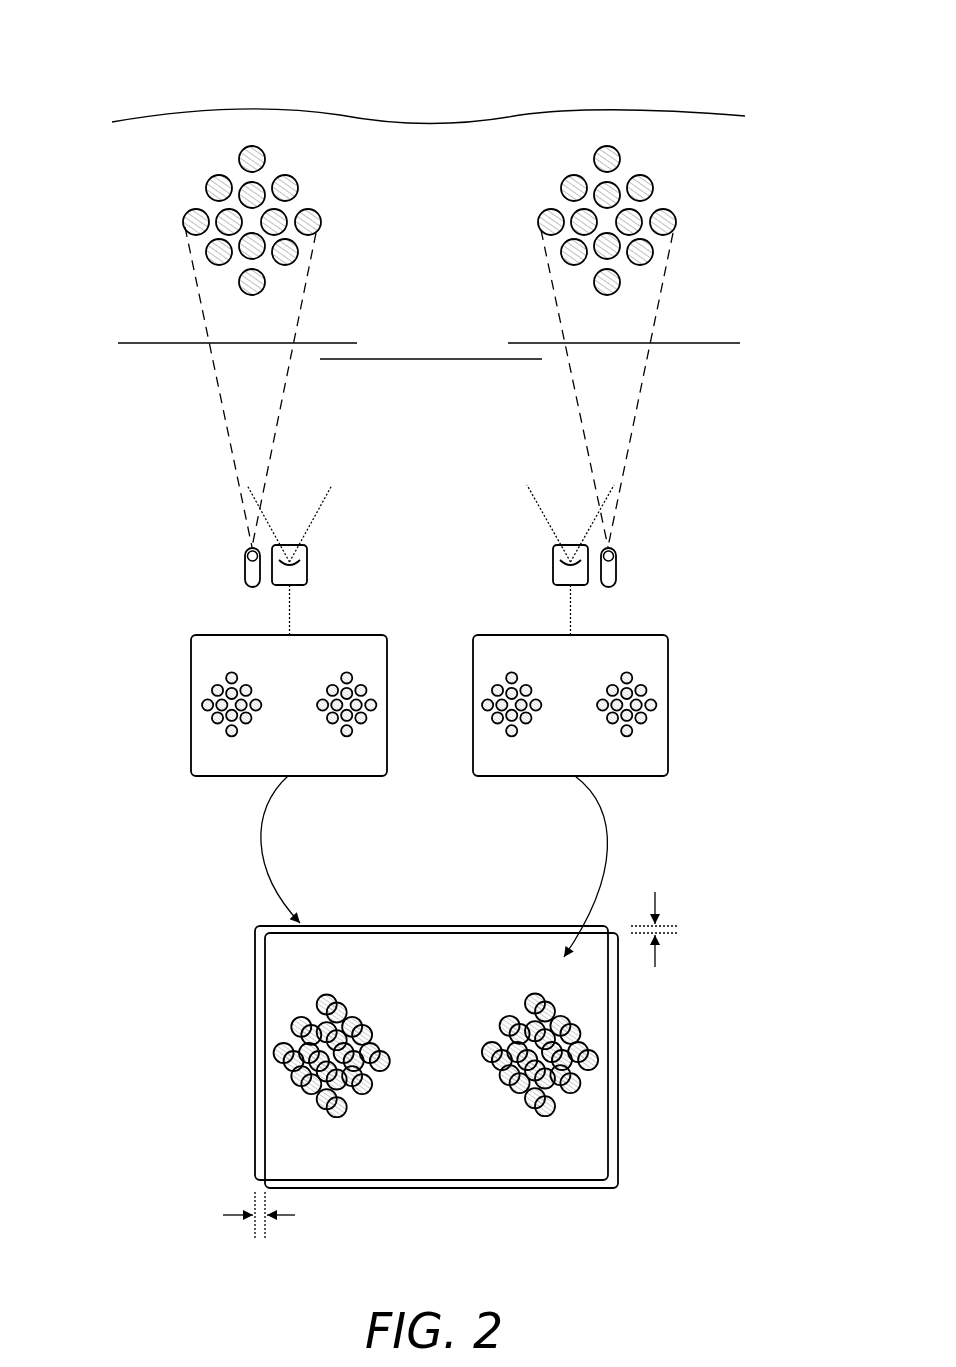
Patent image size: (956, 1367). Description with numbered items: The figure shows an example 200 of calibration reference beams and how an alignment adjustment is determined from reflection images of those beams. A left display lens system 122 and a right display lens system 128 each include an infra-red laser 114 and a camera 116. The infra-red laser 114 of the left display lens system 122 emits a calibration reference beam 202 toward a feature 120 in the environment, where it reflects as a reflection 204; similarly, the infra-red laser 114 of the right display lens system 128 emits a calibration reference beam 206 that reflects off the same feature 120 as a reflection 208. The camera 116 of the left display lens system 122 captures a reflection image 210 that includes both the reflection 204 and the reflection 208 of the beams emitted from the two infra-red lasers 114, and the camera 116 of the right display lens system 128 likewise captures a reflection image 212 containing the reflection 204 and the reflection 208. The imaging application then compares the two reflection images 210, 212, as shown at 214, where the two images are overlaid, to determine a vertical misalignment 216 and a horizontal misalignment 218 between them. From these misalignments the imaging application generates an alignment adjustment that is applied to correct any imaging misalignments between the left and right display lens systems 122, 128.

The example of calibration reference beams 200 is at (730, 64).
The feature 120 is at (372, 140).
The reflection 204 is at (341, 256).
The reflection 208 is at (698, 257).
The calibration reference beam 202 is at (220, 407).
The calibration reference beam 206 is at (638, 410).
The left display lens system 122 is at (147, 553).
The right display lens system 128 is at (702, 553).
The infra-red laser 114 is at (227, 590).
The camera 116 is at (362, 590).
The reflection image 210 is at (191, 670).
The reflection image 212 is at (668, 670).
The comparison of the two reflection images 214 is at (449, 903).
The vertical misalignment 216 is at (673, 886).
The horizontal misalignment 218 is at (214, 1225).